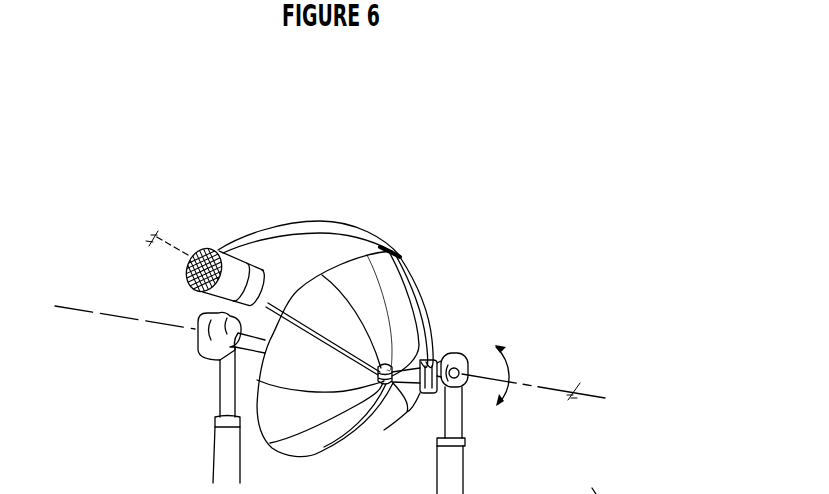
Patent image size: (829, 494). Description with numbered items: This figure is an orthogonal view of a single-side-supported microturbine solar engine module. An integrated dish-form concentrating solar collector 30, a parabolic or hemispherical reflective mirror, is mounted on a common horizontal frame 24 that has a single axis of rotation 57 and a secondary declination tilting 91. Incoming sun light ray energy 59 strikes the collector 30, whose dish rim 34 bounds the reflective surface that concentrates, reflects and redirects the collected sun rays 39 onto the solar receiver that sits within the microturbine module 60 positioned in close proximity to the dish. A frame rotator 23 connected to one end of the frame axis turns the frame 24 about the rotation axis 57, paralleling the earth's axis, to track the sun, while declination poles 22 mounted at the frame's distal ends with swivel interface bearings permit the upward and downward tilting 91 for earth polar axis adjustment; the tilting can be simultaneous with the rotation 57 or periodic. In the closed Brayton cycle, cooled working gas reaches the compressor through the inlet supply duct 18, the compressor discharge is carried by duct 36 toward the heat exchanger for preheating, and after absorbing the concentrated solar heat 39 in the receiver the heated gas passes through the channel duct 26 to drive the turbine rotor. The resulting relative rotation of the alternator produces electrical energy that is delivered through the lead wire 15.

The lead wire 15 is at (137, 493).
The compressor rotor inlet duct 18 is at (83, 485).
The declination poles 22 is at (228, 457).
The frame rotator 23 is at (200, 333).
The horizontal frame 24 is at (438, 360).
The channel duct 26 is at (573, 481).
The concentrating solar collector 30 is at (413, 278).
The reflector rim 34 is at (288, 227).
The duct 36 is at (304, 485).
The reflected concentrated sun rays 39 is at (281, 300).
The single axis rotation 57 is at (98, 313).
The sun light ray energy 59 is at (382, 265).
The microturbine module 60 is at (268, 275).
The declination tilting 91 is at (505, 362).